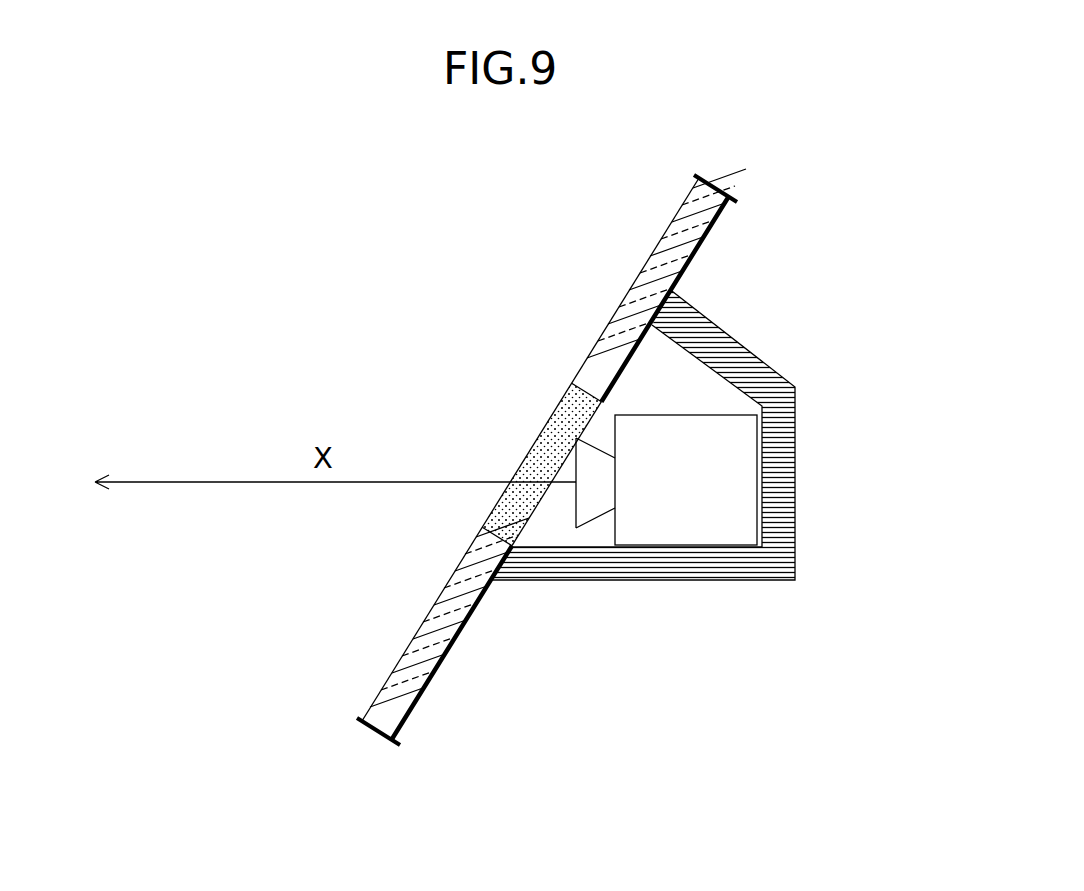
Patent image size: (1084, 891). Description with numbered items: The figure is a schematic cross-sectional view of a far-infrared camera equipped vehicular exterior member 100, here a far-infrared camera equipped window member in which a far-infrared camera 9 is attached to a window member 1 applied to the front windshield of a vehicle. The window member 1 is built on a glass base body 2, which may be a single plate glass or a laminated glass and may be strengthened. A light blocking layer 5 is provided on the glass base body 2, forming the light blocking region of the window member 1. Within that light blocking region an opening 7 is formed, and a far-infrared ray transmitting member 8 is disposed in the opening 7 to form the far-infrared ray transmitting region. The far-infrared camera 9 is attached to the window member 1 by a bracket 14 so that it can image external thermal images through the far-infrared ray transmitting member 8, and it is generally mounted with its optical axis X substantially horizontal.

The window member 1 is at (588, 238).
The glass base body 2 is at (684, 204).
The light blocking layer 5 is at (700, 247).
The opening 7 is at (470, 542).
The far-infrared ray transmitting member 8 is at (565, 408).
The far-infrared camera 9 is at (718, 473).
The bracket 14 is at (778, 360).
The far-infrared camera equipped vehicular exterior member 100 is at (778, 215).